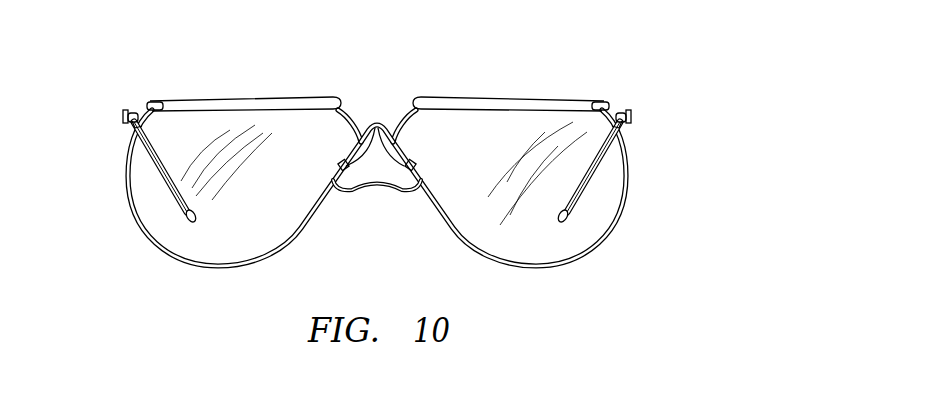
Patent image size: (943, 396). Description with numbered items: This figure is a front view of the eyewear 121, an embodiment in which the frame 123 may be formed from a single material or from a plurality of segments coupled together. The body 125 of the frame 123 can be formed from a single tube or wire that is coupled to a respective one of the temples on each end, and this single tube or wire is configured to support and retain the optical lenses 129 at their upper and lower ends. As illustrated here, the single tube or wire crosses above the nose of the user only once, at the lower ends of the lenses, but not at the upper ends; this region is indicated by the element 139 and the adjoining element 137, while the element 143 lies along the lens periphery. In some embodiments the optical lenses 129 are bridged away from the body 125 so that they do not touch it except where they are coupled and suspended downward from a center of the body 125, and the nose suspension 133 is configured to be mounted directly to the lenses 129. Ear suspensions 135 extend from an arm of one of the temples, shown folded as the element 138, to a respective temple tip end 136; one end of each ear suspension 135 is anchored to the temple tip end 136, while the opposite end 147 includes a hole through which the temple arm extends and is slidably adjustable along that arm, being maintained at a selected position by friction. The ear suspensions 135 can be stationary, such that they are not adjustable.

The eyewear 121 is at (170, 45).
The frame 123 is at (598, 104).
The body 125 is at (437, 103).
The optical lenses 129 is at (283, 216).
The nose suspension 133 is at (392, 205).
The ear suspensions 135 is at (116, 134).
The temple tip end 136 is at (193, 223).
The nose piece 137 is at (353, 190).
The temple 138 is at (155, 178).
The bridge 139 is at (376, 122).
The lens rim 143 is at (138, 227).
The opposite end 147 is at (122, 116).